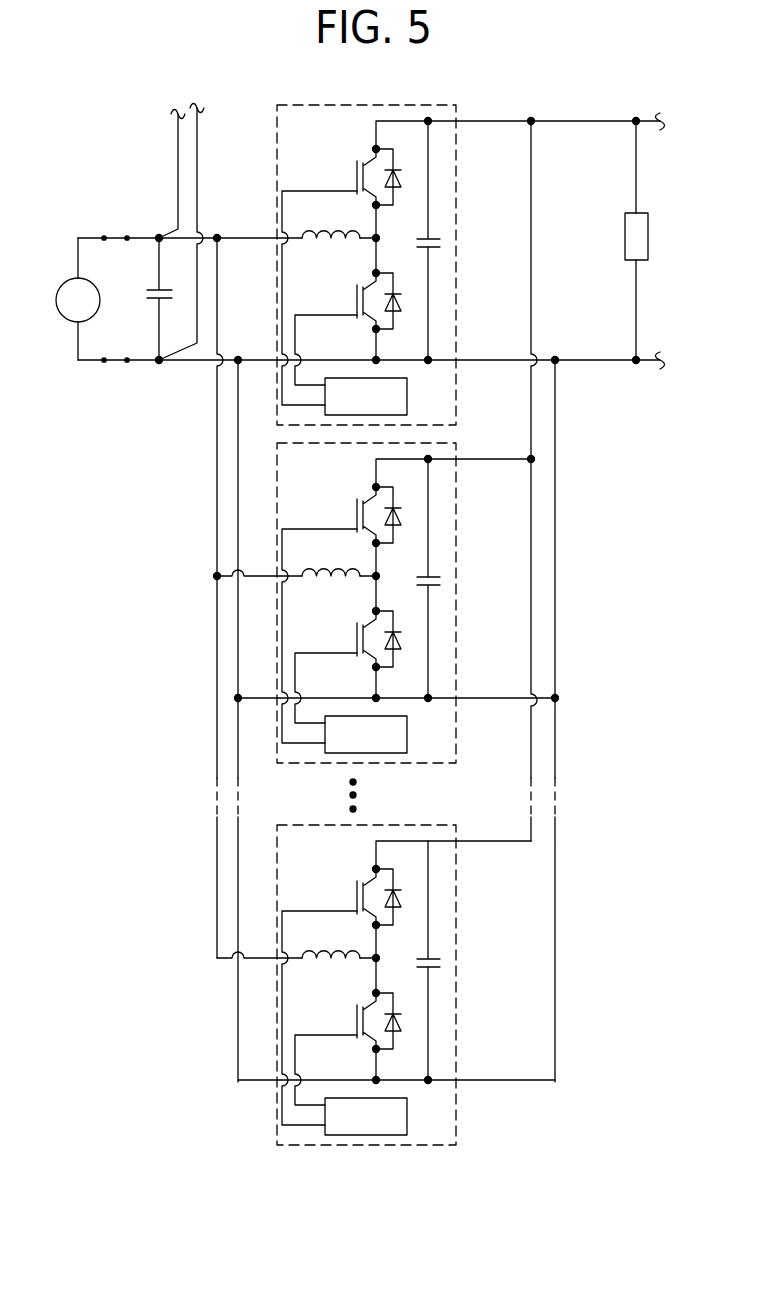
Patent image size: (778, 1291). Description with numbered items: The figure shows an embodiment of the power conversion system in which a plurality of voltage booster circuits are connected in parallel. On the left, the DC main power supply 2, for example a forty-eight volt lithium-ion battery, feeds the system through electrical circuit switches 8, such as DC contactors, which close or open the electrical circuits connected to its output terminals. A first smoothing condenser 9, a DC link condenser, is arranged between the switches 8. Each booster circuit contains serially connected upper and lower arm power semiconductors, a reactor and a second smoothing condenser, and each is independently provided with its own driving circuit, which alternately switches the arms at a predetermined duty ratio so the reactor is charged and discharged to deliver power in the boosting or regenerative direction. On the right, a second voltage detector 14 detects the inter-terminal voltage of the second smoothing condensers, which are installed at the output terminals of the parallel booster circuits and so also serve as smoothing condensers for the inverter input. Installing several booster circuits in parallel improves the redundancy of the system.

The DC main power supply 2 is at (61, 286).
The electrical circuit switches 8 is at (118, 236).
The first smoothing condenser 9 is at (147, 293).
The second voltage detector 14 is at (625, 238).